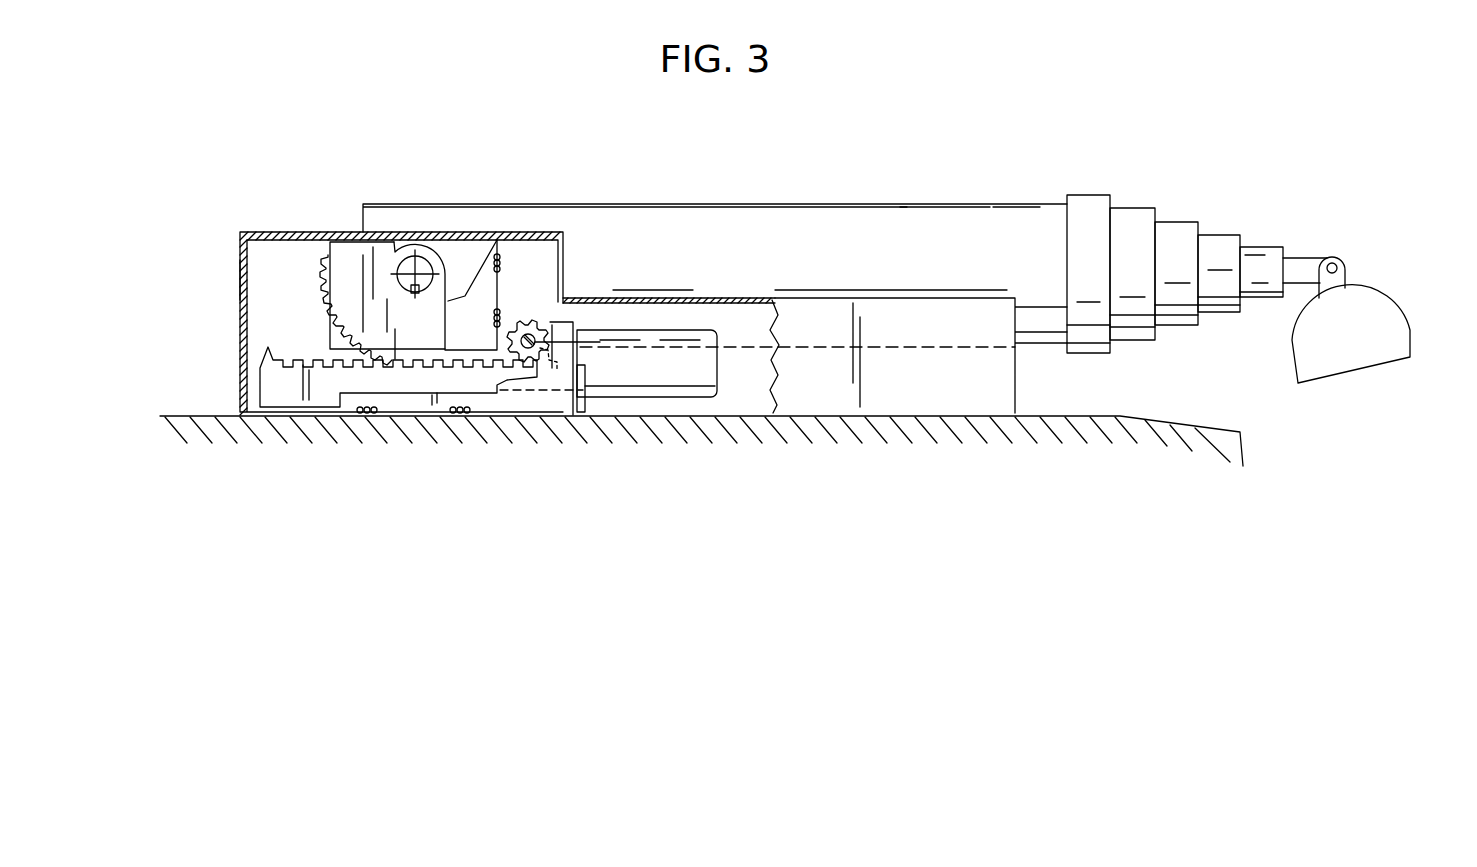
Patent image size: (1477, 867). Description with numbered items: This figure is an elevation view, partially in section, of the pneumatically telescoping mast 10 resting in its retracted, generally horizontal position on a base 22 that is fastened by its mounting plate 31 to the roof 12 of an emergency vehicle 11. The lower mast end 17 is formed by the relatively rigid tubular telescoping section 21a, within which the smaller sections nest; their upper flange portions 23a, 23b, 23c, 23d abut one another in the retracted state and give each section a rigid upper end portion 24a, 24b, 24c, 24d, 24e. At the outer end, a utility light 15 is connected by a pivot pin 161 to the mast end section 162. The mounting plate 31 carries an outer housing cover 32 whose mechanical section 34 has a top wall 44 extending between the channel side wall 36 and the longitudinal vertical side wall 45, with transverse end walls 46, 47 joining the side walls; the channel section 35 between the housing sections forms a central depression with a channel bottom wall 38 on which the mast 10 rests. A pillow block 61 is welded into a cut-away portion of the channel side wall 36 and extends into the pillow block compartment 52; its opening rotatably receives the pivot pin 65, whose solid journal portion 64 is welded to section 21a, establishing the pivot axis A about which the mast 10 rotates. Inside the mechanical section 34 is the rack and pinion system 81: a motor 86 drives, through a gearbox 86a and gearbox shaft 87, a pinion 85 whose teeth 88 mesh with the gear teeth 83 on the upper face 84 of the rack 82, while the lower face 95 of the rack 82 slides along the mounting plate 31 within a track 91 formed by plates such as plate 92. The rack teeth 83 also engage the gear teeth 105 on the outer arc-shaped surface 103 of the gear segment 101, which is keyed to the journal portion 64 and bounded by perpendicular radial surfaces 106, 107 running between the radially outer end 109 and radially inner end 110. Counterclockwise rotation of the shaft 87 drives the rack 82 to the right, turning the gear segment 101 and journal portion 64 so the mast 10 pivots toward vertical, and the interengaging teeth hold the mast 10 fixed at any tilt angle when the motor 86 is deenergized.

The pneumatically telescoping mast 10 is at (980, 197).
The vehicle 11 is at (1243, 447).
The vehicle roof 12 is at (1197, 427).
The utility light 15 is at (1393, 343).
The lower mast end 17 is at (667, 213).
The telescoping section 21a is at (928, 213).
The base 22 is at (943, 297).
The upper flange portion 23a is at (1087, 195).
The upper flange portion 23b is at (1128, 208).
The upper flange portion 23c is at (1176, 222).
The upper flange portion 23d is at (1218, 235).
The rigid upper end portion 24a is at (1110, 348).
The rigid upper end portion 24b is at (1157, 335).
The rigid upper end portion 24c is at (1198, 310).
The rigid upper end portion 24d is at (1262, 248).
The rigid upper end portion 24e is at (1283, 295).
The mounting plate 31 is at (740, 416).
The outer housing cover 32 is at (962, 405).
The mechanical section 34 is at (798, 293).
The channel section 35 is at (890, 347).
The channel sidewall 36 is at (540, 253).
The channel bottom wall 38 is at (817, 347).
The top wall 44 is at (862, 300).
The longitudinal vertical side wall 45 is at (925, 390).
The transverse end wall 46 is at (240, 287).
The transverse end wall 47 is at (1017, 382).
The pillow block compartment 52 is at (240, 247).
The pillow block 61 is at (462, 258).
The journal portion 64 is at (397, 253).
The pivot pin 65 is at (412, 256).
The rack and pinion system 81 is at (250, 388).
The rack 82 is at (280, 405).
The gear teeth 83 is at (266, 345).
The upper face 84 is at (267, 357).
The pinion 85 is at (555, 310).
The motor 86 is at (705, 342).
The gearbox 86a is at (560, 398).
The gearbox shaft 87 is at (588, 343).
The teeth 88 is at (540, 322).
The track 91 is at (413, 417).
The plate 92 is at (390, 403).
The lower face 95 is at (298, 413).
The gear segment 101 is at (345, 235).
The outer arc-shaped surface 103 is at (323, 273).
The gear teeth 105 is at (323, 307).
The radial surface 106 is at (352, 237).
The radial surface 107 is at (497, 235).
The radially outer end 109 is at (330, 240).
The radially inner end 110 is at (415, 255).
The pivot pin 161 is at (1343, 265).
The mast end section 162 is at (1300, 262).
The pivot axis A is at (425, 250).